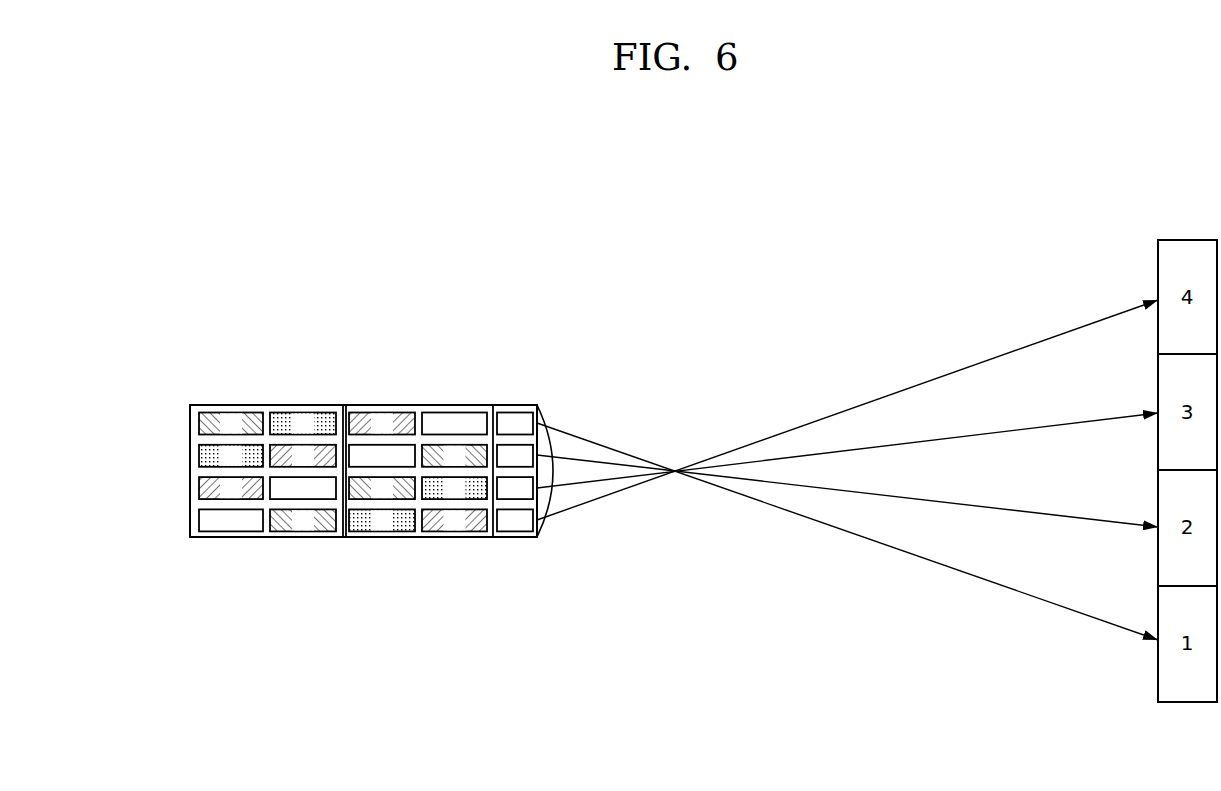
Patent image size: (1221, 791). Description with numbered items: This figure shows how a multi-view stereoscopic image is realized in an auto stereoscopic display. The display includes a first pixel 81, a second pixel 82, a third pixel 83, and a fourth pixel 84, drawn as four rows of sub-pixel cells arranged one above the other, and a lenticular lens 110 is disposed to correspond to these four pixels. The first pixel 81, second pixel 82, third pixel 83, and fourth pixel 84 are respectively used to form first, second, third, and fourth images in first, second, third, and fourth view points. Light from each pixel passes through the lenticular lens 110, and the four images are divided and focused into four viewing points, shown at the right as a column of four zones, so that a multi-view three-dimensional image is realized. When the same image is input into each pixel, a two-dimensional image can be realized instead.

The first pixel 81 is at (199, 423).
The second pixel 82 is at (199, 455).
The third pixel 83 is at (199, 488).
The fourth pixel 84 is at (199, 520).
The lenticular lens 110 is at (549, 437).